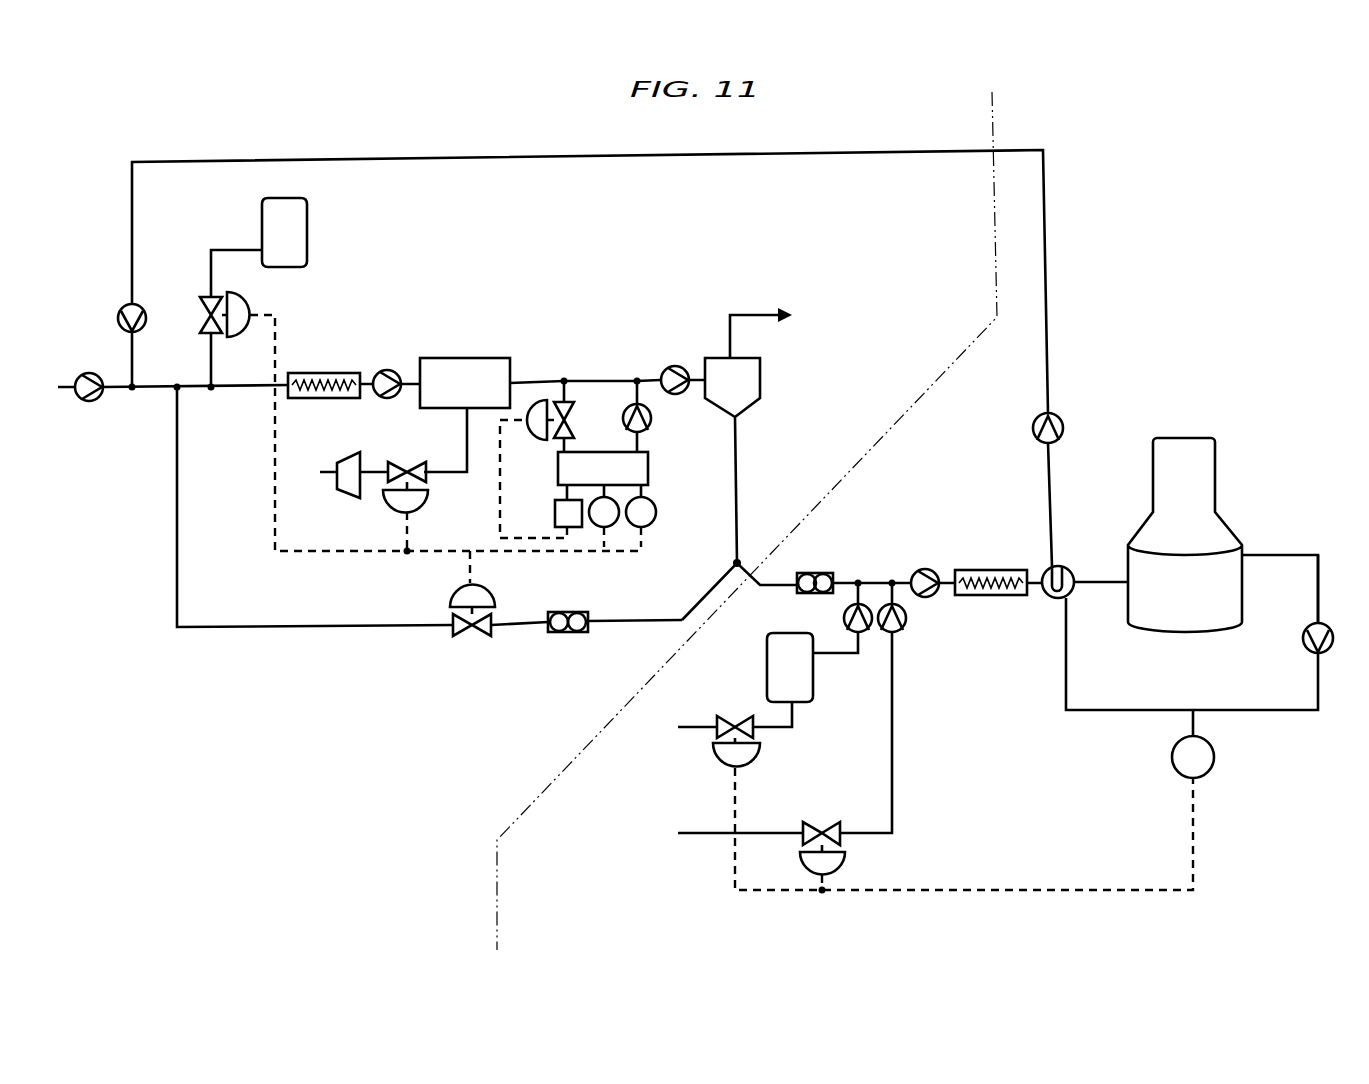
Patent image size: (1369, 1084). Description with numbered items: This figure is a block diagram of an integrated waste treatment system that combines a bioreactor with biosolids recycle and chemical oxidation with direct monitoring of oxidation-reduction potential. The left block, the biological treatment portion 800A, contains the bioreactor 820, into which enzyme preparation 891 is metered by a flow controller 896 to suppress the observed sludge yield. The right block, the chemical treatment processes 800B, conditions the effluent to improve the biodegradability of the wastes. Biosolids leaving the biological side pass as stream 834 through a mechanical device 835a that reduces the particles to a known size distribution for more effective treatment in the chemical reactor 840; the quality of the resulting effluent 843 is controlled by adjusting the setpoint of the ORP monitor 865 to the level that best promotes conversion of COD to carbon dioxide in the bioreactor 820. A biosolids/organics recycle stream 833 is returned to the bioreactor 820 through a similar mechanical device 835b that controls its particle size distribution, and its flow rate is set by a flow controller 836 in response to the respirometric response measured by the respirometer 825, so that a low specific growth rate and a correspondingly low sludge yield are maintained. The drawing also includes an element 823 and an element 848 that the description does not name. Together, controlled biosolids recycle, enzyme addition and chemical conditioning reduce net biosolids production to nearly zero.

The biological treatment portion 800A is at (398, 120).
The chemical treatment processes 800B is at (1218, 367).
The bioreactor 820 is at (455, 358).
The control valve 823 is at (542, 380).
The respirometer 825 is at (656, 449).
The biosolids/organics recycle stream 833 is at (628, 623).
The stream 834 is at (747, 557).
The mechanical device 835a is at (815, 573).
The mechanical device 835b is at (565, 633).
The flow controller 836 is at (450, 603).
The chemical reactor 840 is at (1250, 510).
The effluent 843 is at (1290, 553).
The heater 848 is at (986, 568).
The ORP monitor 865 is at (1212, 762).
The enzyme preparation 891 is at (212, 363).
The flow controller 896 is at (247, 292).